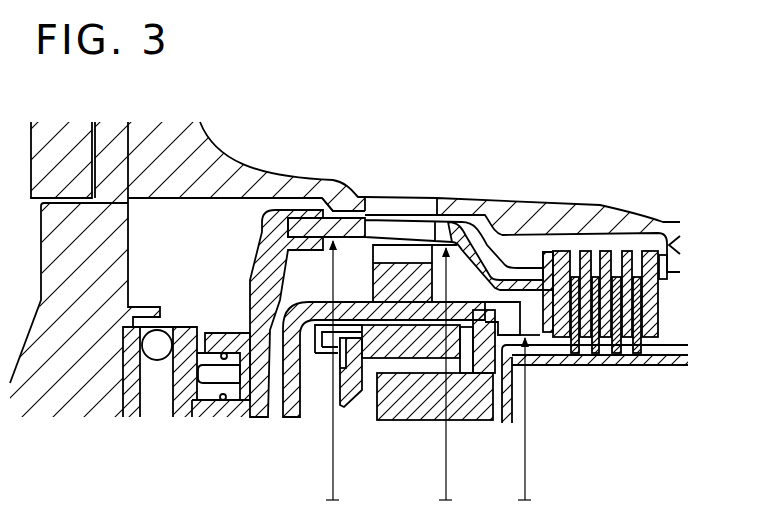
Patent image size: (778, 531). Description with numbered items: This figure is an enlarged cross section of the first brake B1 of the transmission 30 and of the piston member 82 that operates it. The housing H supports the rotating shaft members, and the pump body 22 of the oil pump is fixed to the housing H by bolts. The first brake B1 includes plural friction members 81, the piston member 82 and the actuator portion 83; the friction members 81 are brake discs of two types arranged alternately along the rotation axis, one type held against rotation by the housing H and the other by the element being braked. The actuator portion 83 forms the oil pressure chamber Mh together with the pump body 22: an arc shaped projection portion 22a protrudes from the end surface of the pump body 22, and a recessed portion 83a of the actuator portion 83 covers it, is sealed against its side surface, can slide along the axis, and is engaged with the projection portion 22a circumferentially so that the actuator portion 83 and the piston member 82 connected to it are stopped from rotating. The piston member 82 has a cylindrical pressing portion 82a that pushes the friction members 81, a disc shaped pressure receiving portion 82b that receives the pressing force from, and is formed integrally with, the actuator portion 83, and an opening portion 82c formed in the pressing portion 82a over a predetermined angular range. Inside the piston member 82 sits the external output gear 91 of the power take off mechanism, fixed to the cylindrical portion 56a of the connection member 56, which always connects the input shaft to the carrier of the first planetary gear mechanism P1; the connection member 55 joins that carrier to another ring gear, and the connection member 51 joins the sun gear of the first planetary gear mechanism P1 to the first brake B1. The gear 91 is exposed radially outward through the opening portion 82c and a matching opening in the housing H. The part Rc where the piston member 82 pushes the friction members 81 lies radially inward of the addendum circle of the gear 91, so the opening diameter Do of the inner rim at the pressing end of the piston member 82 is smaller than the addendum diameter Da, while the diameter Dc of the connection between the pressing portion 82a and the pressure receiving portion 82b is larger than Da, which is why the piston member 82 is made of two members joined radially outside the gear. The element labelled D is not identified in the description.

The housing H is at (263, 178).
The transmission 30 is at (523, 155).
The piston member 82 is at (420, 204).
The pressing portion 82a is at (346, 216).
The pressure receiving portion 82b is at (303, 197).
The opening portion 82c is at (433, 220).
The external output gear 91 is at (390, 245).
The friction members 81 is at (563, 249).
The first brake B1 is at (668, 307).
The P1cN member 56 is at (291, 405).
The cylindrical portion 56a is at (327, 300).
The P1cP2r member 55 is at (353, 412).
The first planetary gear mechanism P1 is at (394, 422).
The actuator portion 83 is at (212, 331).
The recessed portion 83a is at (233, 354).
The oil pressure chamber Mh is at (245, 393).
The pump body 22 is at (127, 388).
The projection portion 22a is at (207, 399).
The O-ring D is at (158, 398).
The P1sB1 member 51 is at (653, 366).
The part pushed by the piston member Rc is at (554, 347).
The diameter of connection portion Dc is at (320, 370).
The diameter of addendum circle Da is at (434, 374).
The opening diameter Do is at (513, 419).